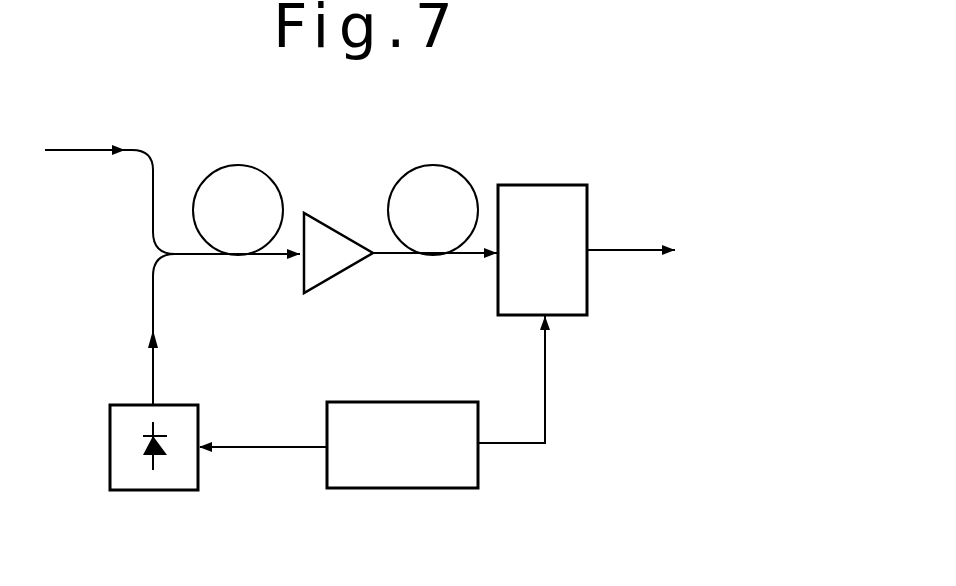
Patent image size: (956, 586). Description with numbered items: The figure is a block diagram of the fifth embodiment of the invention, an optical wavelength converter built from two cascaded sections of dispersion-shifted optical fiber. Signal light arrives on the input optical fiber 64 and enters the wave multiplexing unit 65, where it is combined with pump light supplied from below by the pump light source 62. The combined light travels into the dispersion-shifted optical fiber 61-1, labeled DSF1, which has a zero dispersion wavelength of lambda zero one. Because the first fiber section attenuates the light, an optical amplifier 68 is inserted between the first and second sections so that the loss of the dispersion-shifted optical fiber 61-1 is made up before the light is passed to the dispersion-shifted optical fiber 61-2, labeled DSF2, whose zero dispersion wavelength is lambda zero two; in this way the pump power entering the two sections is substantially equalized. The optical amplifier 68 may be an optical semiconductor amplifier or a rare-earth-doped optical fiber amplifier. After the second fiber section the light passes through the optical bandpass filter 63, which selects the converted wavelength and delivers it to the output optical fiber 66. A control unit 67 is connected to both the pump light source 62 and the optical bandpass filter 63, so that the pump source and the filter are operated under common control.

The dispersion-shifted optical fiber 61-1 is at (278, 237).
The dispersion-shifted optical fiber 61-2 is at (468, 237).
The pump light source 62 is at (180, 492).
The optical bandpass filter 63 is at (563, 185).
The input optical fiber 64 is at (110, 152).
The wave multiplexing unit 65 is at (157, 254).
The output optical fiber 66 is at (613, 252).
The control unit 67 is at (408, 400).
The optical amplifier 68 is at (347, 268).